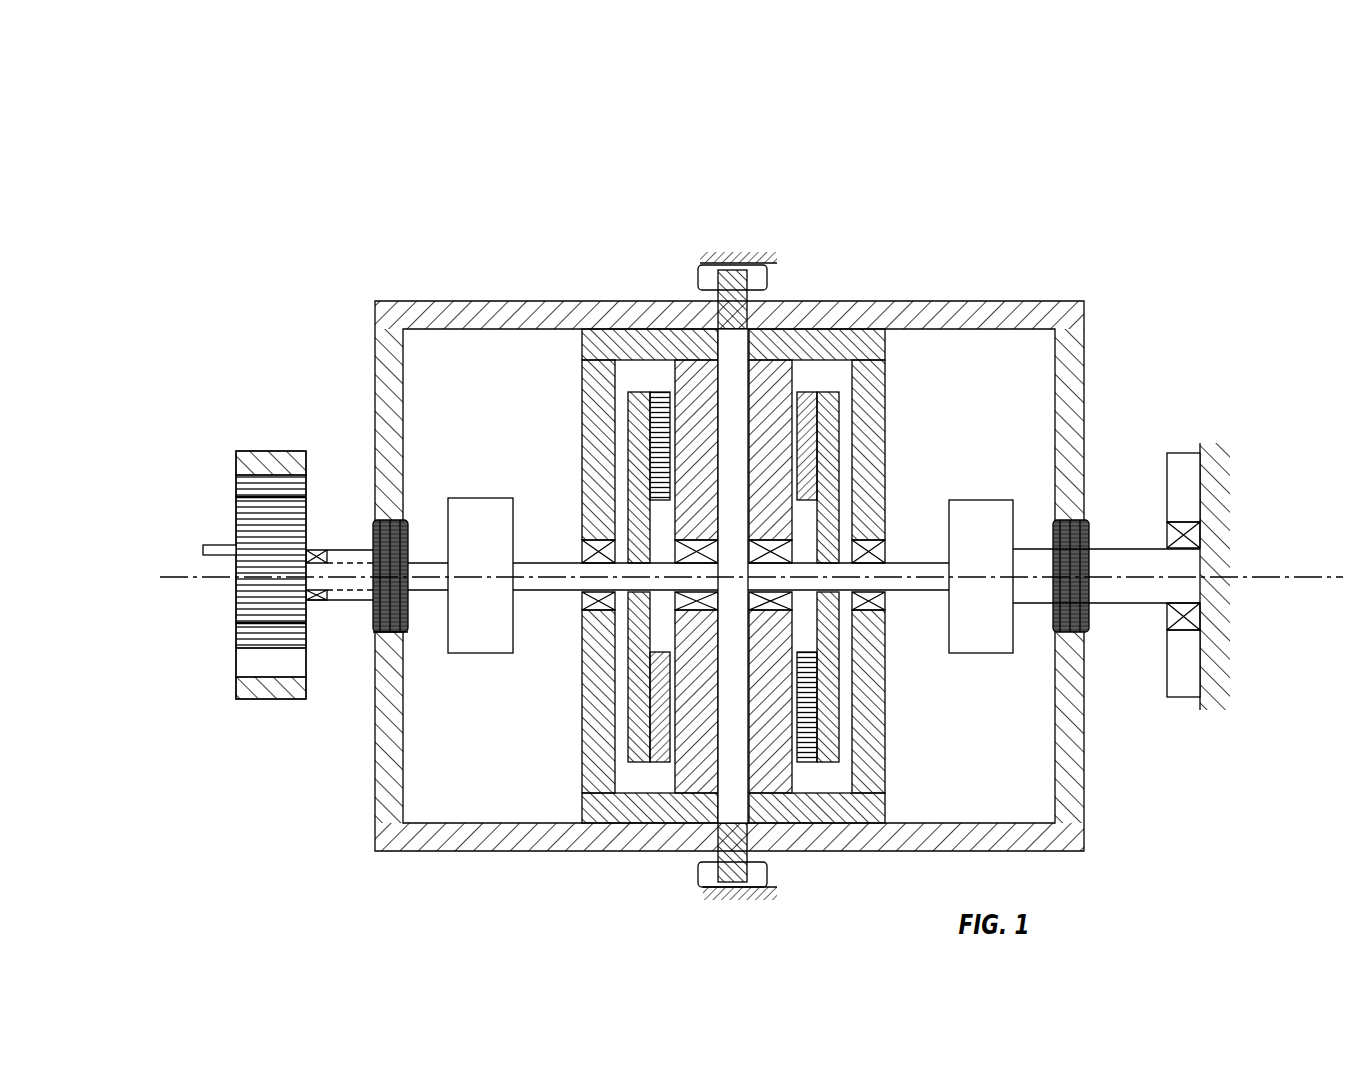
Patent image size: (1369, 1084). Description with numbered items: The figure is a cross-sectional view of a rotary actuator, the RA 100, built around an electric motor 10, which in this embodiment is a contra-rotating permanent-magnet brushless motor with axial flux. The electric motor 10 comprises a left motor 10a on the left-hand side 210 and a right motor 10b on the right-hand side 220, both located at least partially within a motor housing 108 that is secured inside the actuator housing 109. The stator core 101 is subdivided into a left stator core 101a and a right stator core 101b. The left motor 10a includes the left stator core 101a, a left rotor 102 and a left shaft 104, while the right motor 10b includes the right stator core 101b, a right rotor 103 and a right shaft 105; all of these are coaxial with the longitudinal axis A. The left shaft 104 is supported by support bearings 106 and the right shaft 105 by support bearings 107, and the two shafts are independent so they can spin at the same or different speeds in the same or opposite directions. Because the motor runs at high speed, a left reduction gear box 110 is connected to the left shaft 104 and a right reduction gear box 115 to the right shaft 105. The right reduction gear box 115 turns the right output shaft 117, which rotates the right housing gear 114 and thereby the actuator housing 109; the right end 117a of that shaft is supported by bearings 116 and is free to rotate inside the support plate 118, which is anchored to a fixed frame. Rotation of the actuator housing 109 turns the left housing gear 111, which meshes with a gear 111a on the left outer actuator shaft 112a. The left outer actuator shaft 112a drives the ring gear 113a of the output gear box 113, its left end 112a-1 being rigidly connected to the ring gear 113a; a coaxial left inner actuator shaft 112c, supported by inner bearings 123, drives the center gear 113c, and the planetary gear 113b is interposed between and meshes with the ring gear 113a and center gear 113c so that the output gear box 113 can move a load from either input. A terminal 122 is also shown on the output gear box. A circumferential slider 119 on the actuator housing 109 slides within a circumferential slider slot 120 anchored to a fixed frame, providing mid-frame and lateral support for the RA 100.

The rotary actuator 100 is at (112, 162).
The left-hand side 210 is at (437, 158).
The right-hand side 220 is at (1012, 158).
The electric motor 10 is at (572, 440).
The left motor 10a is at (618, 760).
The right motor 10b is at (841, 760).
The stator core 101 is at (793, 501).
The left stator core 101a is at (694, 388).
The right stator core 101b is at (782, 382).
The left rotor 102 is at (636, 390).
The right rotor 103 is at (832, 392).
The left shaft 104 is at (530, 560).
The right shaft 105 is at (922, 553).
The support bearings 106 is at (688, 606).
The support bearings 107 is at (788, 608).
The motor housing 108 is at (887, 340).
The actuator housing 109 is at (1032, 301).
The left reduction gear box 110 is at (477, 632).
The left housing gear 111 is at (398, 520).
The gear 111a is at (393, 594).
The left outer actuator shaft 112a is at (347, 603).
The left end 112a-1 is at (318, 596).
The left inner actuator shaft 112c is at (345, 562).
The output gear box 113 is at (226, 495).
The ring gear 113a is at (235, 460).
The planetary gear 113b is at (236, 492).
The center gear 113c is at (257, 618).
The right housing gear 114 is at (1070, 521).
The right reduction gear box 115 is at (987, 632).
The bearings 116 is at (1183, 537).
The right output shaft 117 is at (1142, 604).
The right end 117a is at (1195, 596).
The support plate 118 is at (1185, 453).
The circumferential slider 119 is at (703, 858).
The circumferential slider slot 120 is at (767, 877).
The terminal 122 is at (212, 545).
The inner bearings 123 is at (320, 549).
The longitudinal axis A is at (1307, 575).